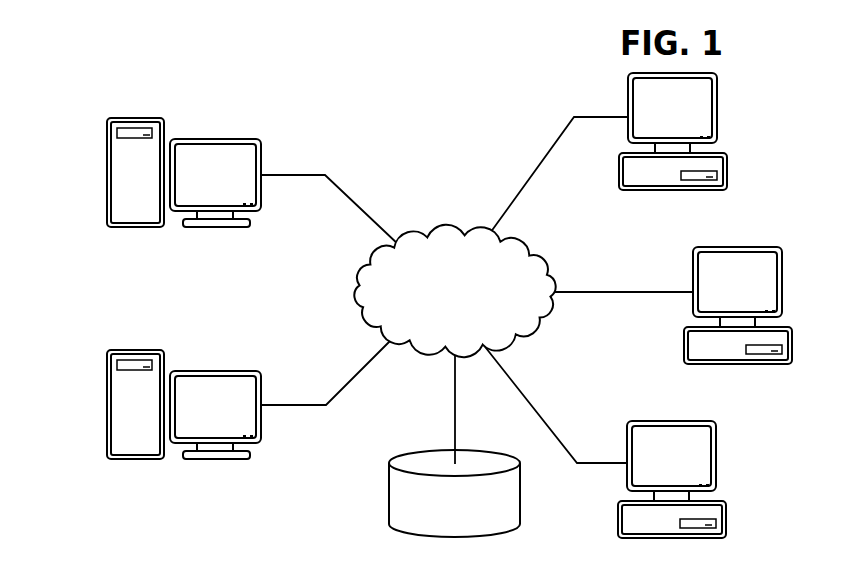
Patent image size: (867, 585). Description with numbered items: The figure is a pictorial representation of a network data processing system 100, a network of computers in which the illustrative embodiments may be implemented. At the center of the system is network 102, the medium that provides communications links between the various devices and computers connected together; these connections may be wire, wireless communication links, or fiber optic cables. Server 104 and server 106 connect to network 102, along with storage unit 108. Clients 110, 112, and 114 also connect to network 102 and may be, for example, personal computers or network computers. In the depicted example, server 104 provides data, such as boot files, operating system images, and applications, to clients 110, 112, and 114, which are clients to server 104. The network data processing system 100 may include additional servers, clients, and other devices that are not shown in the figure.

The network data processing system 100 is at (329, 87).
The network 102 is at (452, 232).
The server 104 is at (107, 172).
The server 106 is at (107, 403).
The storage unit 108 is at (388, 497).
The client 110 is at (730, 172).
The client 112 is at (795, 345).
The client 114 is at (730, 518).